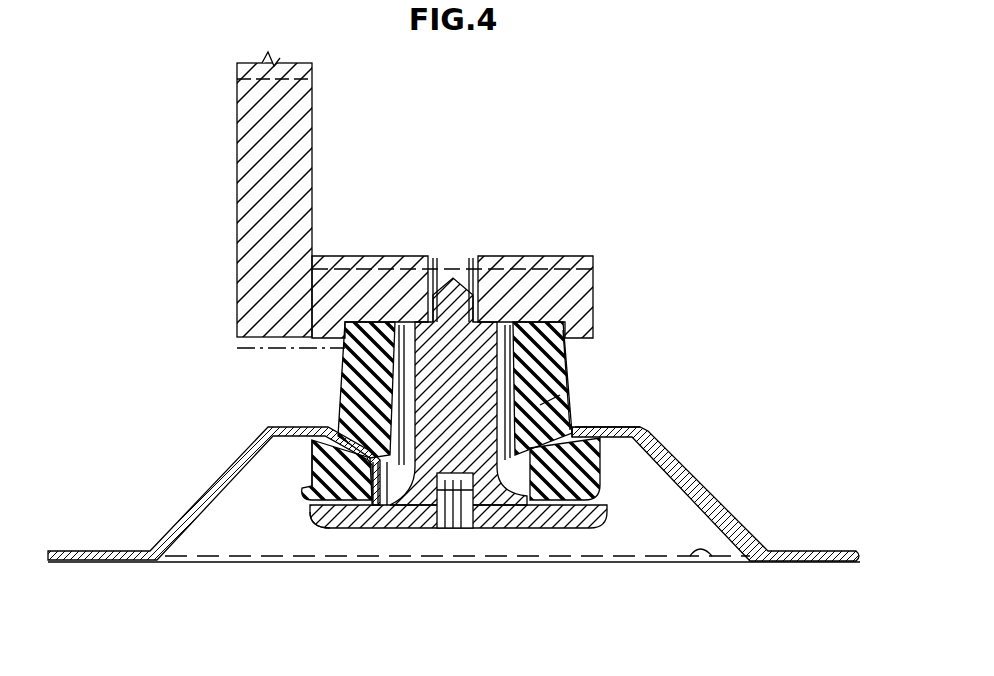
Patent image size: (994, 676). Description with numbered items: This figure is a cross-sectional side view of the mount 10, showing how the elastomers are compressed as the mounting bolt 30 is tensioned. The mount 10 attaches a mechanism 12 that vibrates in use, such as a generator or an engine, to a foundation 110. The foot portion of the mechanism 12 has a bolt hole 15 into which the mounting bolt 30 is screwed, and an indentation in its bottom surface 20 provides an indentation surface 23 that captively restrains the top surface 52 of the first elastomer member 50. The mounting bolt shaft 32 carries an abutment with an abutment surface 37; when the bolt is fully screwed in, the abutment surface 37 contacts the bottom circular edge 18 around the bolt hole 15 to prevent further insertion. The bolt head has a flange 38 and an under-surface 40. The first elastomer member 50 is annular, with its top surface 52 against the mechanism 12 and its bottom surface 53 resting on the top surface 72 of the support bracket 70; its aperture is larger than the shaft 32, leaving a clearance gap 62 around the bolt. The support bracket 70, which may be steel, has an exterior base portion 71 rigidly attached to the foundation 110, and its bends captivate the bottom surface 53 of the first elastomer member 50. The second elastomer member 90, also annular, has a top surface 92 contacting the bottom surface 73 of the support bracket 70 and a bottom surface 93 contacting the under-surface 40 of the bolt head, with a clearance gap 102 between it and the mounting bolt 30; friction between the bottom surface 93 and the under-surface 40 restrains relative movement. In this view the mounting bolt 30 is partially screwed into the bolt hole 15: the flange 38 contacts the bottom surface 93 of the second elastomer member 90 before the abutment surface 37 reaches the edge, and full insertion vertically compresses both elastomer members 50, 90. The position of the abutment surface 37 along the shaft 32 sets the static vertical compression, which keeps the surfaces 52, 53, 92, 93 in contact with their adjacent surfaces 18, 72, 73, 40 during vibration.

The mount 10 is at (712, 395).
The mechanism 12 is at (237, 193).
The bolt hole 15 is at (458, 262).
The bottom circular edge 18 is at (510, 292).
The bottom surface 20 is at (385, 338).
The indentation surface 23 is at (340, 350).
The mounting bolt 30 is at (300, 528).
The mounting bolt shaft 32 is at (545, 413).
The abutment surface 37 is at (410, 345).
The flange 38 is at (605, 498).
The under-surface 40 is at (572, 530).
The first elastomer member 50 is at (565, 395).
The top surface 52 is at (593, 308).
The bottom surface 53 is at (378, 505).
The clearance gap 62 is at (560, 372).
The support bracket 70 is at (715, 503).
The exterior base portion 71 is at (806, 552).
The top surface 72 is at (645, 430).
The bottom surface 73 is at (614, 440).
The second elastomer member 90 is at (312, 472).
The top surface 92 is at (312, 432).
The bottom surface 93 is at (340, 526).
The clearance gap 102 is at (525, 495).
The foundation 110 is at (708, 562).